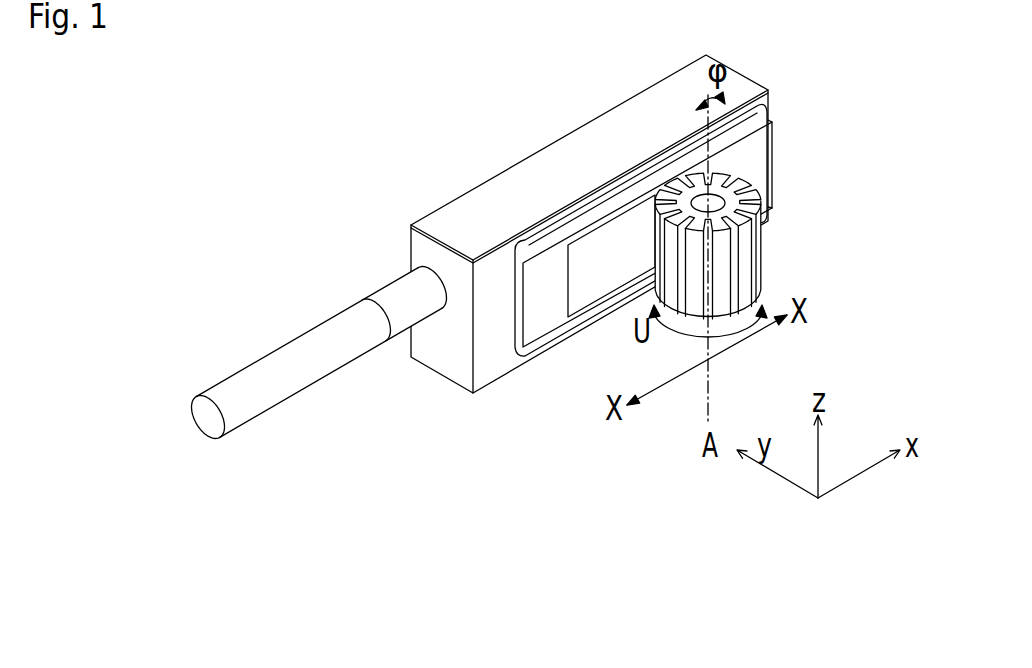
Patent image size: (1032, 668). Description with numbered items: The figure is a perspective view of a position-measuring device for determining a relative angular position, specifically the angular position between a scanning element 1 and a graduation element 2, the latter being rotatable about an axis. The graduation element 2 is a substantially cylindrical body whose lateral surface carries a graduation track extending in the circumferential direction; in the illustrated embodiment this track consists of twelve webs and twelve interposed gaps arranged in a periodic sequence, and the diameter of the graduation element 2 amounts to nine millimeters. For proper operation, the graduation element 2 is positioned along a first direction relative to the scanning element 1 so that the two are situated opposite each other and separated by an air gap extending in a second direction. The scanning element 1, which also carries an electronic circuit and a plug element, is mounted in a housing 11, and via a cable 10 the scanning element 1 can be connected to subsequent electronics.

The scanning element 1 is at (777, 153).
The graduation element 2 is at (769, 244).
The cable 10 is at (318, 368).
The housing 11 is at (622, 127).